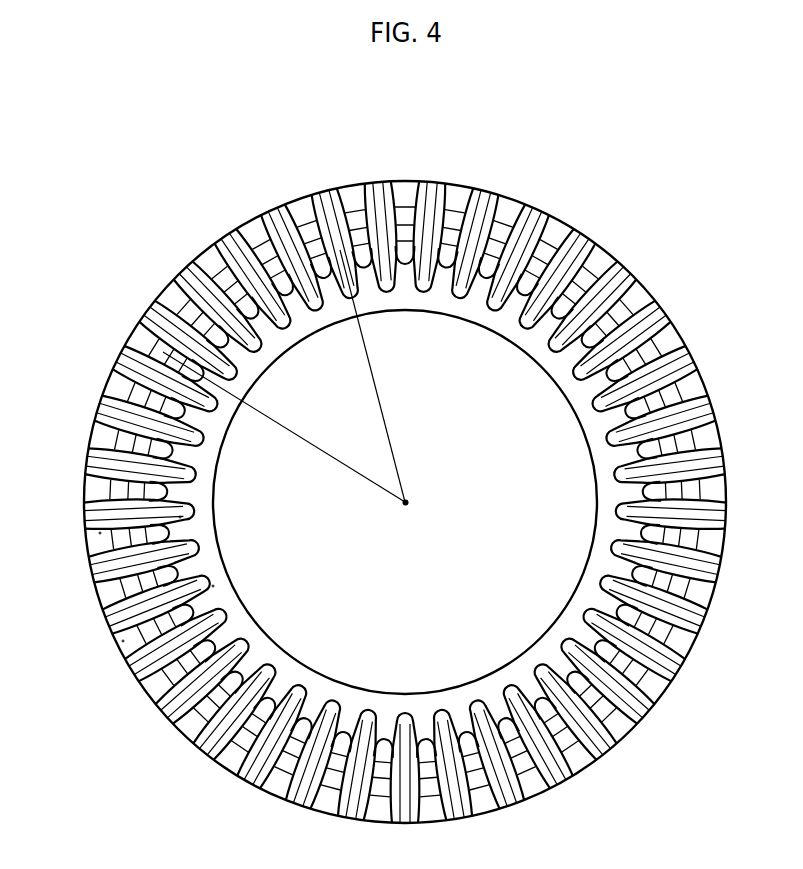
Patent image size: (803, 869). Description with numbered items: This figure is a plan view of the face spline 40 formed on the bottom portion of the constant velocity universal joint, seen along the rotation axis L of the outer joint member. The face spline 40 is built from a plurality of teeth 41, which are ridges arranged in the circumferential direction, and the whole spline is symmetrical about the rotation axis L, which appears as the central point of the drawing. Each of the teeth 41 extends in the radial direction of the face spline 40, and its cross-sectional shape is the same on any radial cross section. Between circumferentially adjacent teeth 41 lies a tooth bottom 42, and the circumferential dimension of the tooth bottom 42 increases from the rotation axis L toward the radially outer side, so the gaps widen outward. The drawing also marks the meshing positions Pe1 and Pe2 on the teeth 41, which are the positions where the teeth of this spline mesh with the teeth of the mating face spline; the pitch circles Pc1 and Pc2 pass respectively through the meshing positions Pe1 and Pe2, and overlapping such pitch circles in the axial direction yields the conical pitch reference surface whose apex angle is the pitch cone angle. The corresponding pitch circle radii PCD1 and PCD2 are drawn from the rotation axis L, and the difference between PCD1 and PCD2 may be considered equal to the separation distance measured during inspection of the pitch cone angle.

The face spline 40 is at (413, 494).
The teeth 41 is at (580, 240).
The tooth bottom 42 is at (556, 243).
The rotation axis L is at (411, 502).
The pitch circle radius PCD1 is at (284, 427).
The pitch circle radius PCD2 is at (390, 376).
The meshing position Pe1 is at (100, 533).
The meshing position Pe2 is at (180, 517).
The pitch circle Pc1 is at (123, 641).
The pitch circle Pc2 is at (213, 586).